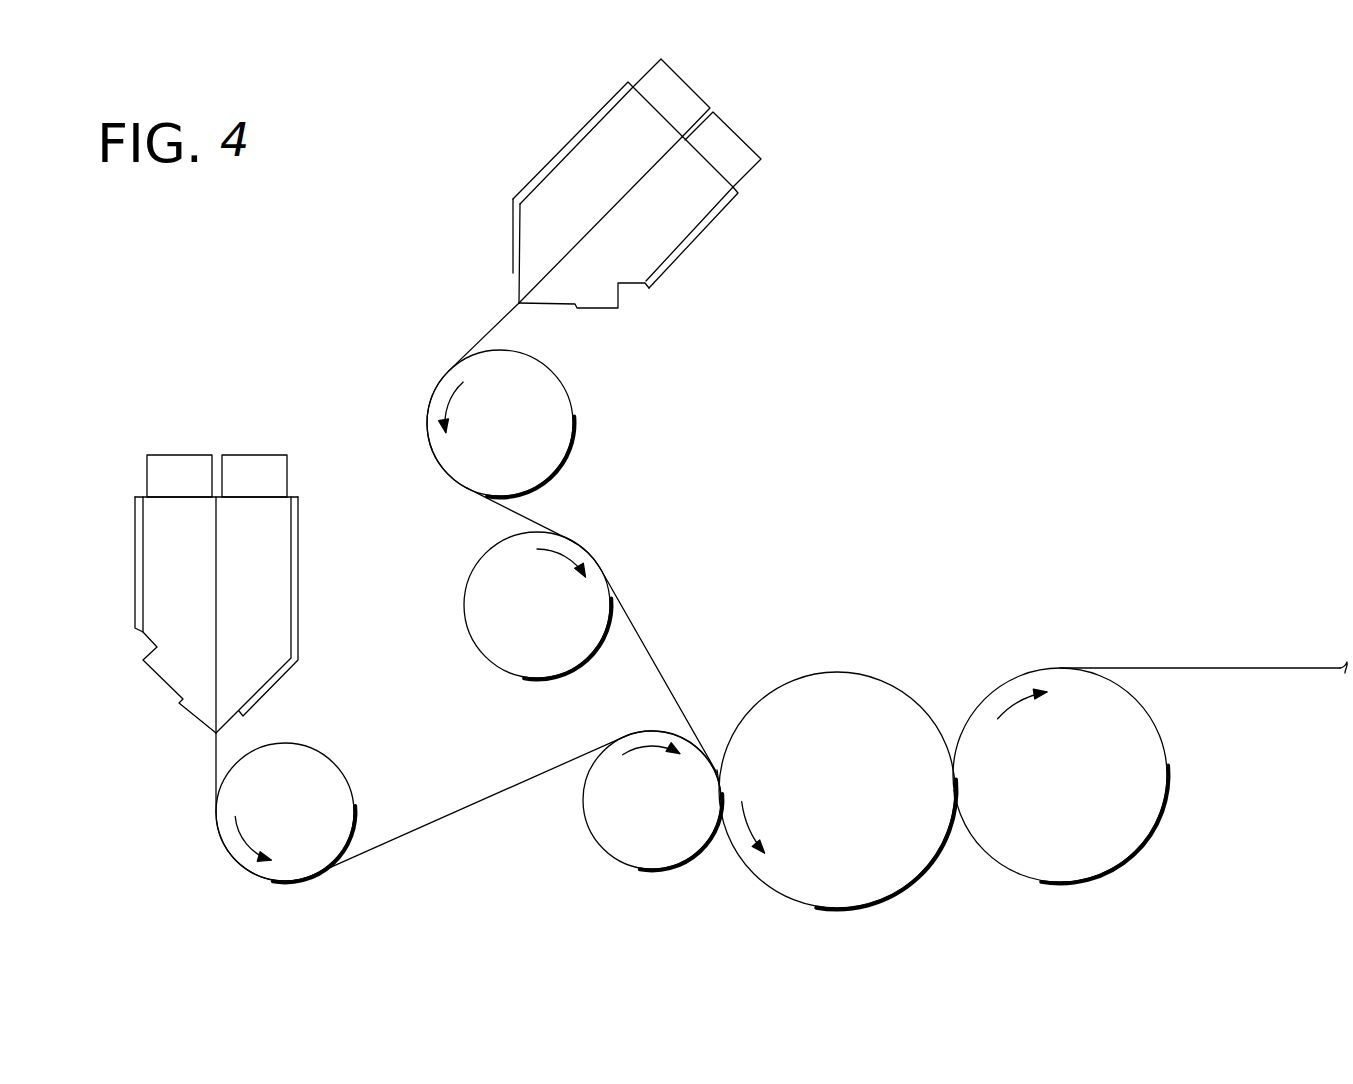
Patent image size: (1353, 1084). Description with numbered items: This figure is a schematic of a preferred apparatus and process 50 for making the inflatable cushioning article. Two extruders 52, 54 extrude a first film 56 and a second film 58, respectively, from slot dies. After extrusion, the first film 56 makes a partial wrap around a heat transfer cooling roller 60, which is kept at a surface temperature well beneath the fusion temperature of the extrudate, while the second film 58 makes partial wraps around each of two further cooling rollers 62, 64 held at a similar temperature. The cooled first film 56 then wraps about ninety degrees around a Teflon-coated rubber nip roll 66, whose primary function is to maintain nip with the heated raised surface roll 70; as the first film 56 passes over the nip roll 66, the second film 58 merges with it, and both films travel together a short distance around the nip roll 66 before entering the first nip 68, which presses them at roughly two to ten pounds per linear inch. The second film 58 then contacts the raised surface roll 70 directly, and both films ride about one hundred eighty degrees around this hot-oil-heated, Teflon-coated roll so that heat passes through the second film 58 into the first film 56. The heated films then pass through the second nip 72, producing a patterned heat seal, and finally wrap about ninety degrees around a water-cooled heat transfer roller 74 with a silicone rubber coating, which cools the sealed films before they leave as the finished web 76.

The apparatus and process 50 is at (192, 875).
The extruder 52 is at (162, 563).
The extruder 54 is at (597, 147).
The first film 56 is at (215, 773).
The second film 58 is at (497, 323).
The heat transfer (cooling) roller 60 is at (308, 760).
The heat transfer (cooling) roller 62 is at (560, 417).
The heat transfer (cooling) roller 64 is at (477, 590).
The nip roll 66 is at (622, 843).
The first nip 68 is at (717, 773).
The raised surface roll 70 is at (822, 687).
The second nip 72 is at (955, 800).
The heat transfer (cooling) roller 74 is at (1137, 812).
The composite web 76 is at (1177, 667).